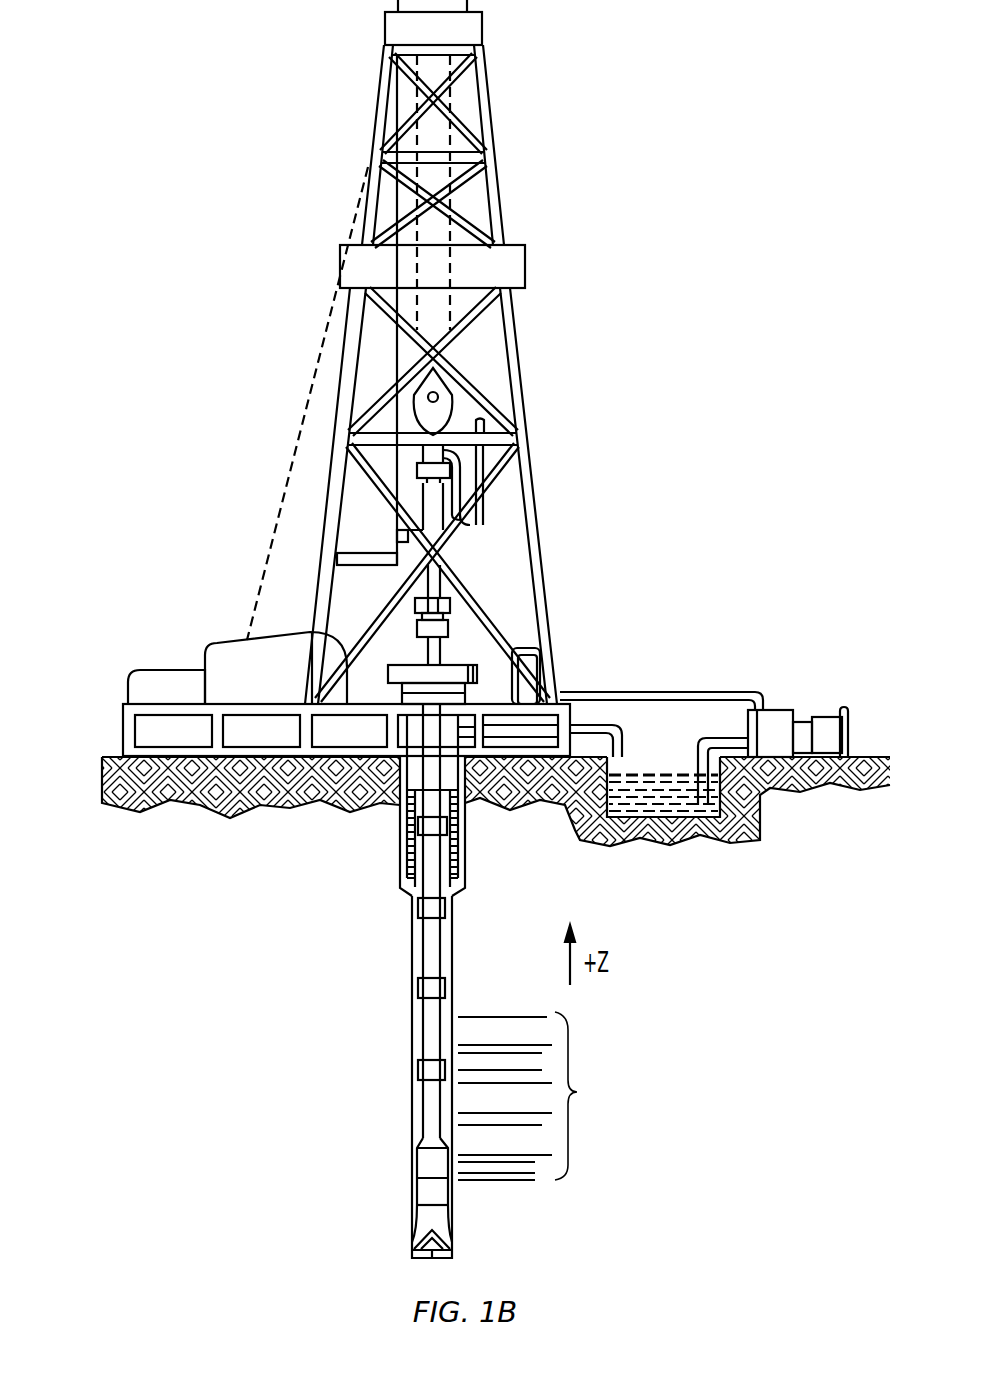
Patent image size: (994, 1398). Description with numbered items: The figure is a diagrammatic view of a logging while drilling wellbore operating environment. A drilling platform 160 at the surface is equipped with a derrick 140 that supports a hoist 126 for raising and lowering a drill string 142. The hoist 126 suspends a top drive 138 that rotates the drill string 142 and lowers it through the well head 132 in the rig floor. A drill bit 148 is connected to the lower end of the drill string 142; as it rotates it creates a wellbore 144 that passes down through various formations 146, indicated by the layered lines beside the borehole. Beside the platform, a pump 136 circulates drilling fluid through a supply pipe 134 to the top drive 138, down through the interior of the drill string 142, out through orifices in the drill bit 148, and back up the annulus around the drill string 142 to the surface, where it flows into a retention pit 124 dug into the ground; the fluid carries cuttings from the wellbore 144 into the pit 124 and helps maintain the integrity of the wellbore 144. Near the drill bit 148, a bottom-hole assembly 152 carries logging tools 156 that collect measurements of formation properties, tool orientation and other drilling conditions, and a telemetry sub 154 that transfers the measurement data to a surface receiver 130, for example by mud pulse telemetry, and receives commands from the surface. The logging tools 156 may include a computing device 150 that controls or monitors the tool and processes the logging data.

The retention pit 124 is at (657, 803).
The hoist 126 is at (452, 400).
The surface receiver 130 is at (448, 605).
The well head 132 is at (455, 665).
The supply pipe 134 is at (657, 692).
The pump 136 is at (780, 720).
The top drive 138 is at (440, 490).
The derrick 140 is at (495, 192).
The drill string 142 is at (442, 950).
The wellbore 144 is at (457, 977).
The formations 146 is at (538, 1096).
The drill bit 148 is at (453, 1247).
The computing device 150 is at (433, 1198).
The bottom-hole assembly 152 is at (333, 1133).
The telemetry sub 154 is at (423, 1162).
The logging tools 156 is at (423, 1192).
The drilling platform 160 is at (123, 728).